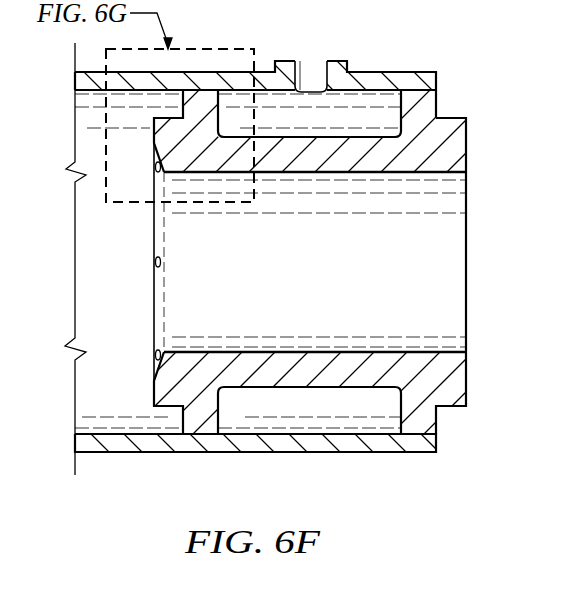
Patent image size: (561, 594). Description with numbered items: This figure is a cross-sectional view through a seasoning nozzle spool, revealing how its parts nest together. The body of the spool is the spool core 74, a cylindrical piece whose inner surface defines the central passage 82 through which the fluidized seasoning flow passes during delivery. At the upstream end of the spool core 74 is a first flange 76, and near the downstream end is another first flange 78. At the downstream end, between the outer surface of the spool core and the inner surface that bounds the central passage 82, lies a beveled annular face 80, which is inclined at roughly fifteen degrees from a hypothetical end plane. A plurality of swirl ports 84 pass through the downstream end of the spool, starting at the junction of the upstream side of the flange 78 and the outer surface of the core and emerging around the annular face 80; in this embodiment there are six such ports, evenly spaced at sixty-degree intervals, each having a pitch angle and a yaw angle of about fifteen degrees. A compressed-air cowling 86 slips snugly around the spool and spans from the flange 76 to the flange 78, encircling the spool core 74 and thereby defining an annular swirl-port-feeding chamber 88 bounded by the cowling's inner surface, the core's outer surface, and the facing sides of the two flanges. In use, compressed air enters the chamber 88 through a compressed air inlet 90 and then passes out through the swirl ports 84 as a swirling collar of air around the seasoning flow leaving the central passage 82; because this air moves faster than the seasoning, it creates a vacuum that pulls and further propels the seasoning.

The spool core 74 is at (294, 390).
The first flange 76 is at (438, 103).
The first flange 78 is at (222, 418).
The annular face 80 is at (152, 367).
The central passage 82 is at (447, 283).
The swirl ports 84 is at (155, 262).
The compressed-air cowling 86 is at (376, 72).
The annular swirl-port-feeding chamber 88 is at (334, 126).
The compressed air inlet 90 is at (318, 68).